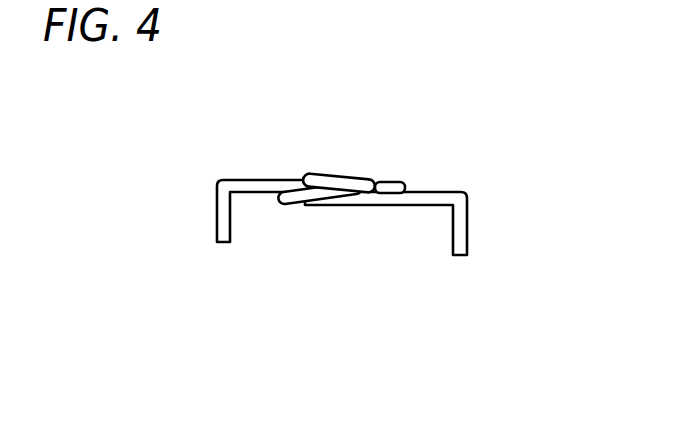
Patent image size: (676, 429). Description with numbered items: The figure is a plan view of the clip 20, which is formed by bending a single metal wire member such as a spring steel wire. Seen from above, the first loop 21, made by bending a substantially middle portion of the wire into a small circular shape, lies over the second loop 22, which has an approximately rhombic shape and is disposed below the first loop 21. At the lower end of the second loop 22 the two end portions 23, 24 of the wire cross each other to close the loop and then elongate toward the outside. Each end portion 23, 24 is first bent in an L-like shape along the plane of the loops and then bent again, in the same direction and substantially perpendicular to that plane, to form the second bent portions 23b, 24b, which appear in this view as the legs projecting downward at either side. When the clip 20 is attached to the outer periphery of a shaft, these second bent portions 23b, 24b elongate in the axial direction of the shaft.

The clip 20 is at (467, 119).
The first loop 21 is at (325, 177).
The second loop 22 is at (392, 178).
The end portion 23 is at (250, 180).
The second bent portion 23b is at (217, 227).
The end portion 24 is at (447, 193).
The second bent portion 24b is at (468, 230).